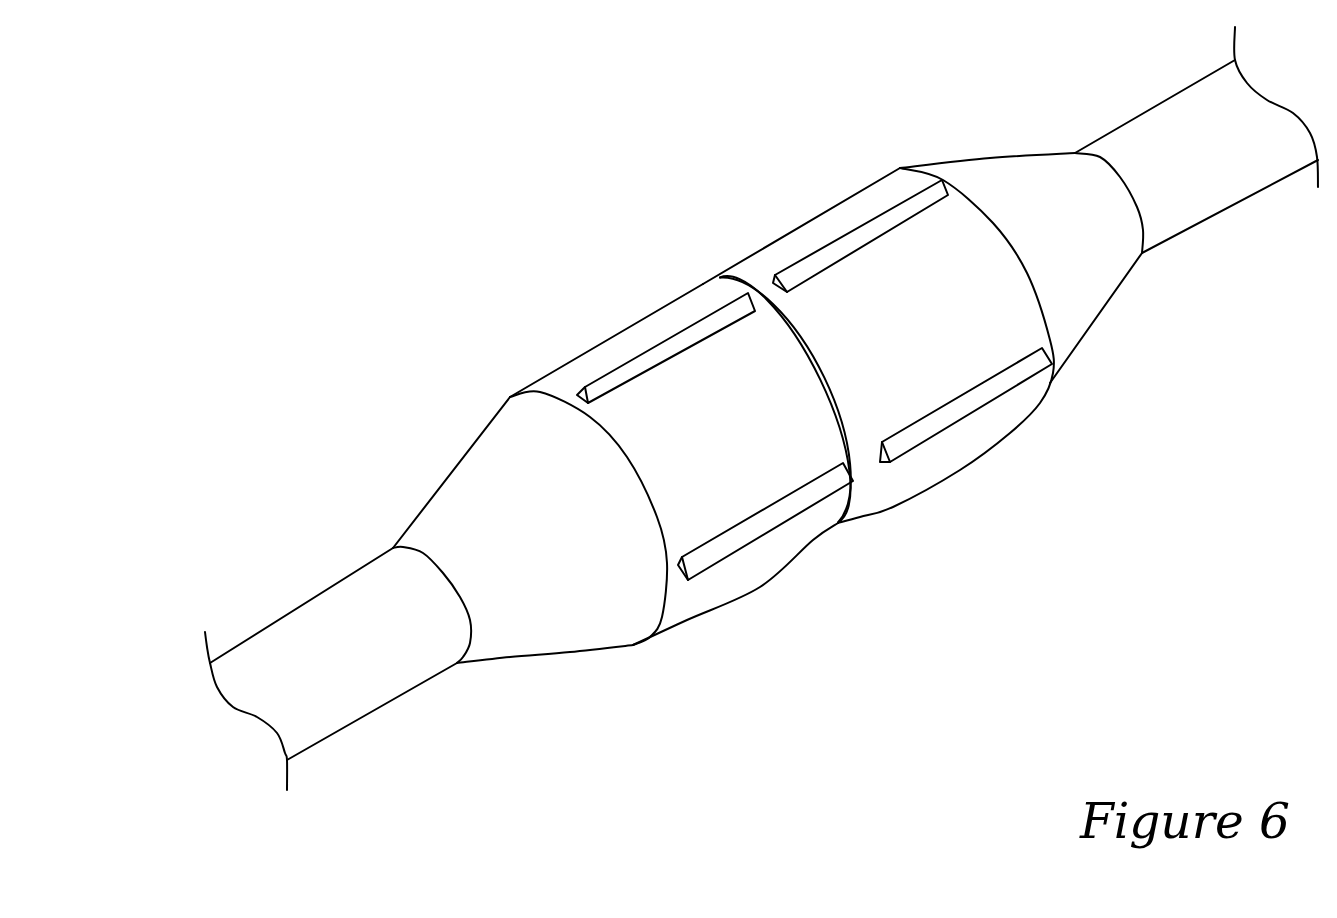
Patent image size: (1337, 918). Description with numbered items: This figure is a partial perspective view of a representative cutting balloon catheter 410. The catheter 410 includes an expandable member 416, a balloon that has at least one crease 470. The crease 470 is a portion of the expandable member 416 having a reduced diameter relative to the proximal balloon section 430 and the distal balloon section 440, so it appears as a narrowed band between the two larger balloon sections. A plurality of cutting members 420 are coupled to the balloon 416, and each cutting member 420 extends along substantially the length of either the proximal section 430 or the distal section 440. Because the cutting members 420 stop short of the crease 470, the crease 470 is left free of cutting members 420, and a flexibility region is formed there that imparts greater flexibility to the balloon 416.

The catheter 410 is at (385, 463).
The expandable member 416 is at (913, 267).
The cutting members 420 is at (703, 322).
The proximal balloon section 430 is at (653, 403).
The distal balloon section 440 is at (805, 230).
The crease 470 is at (758, 285).